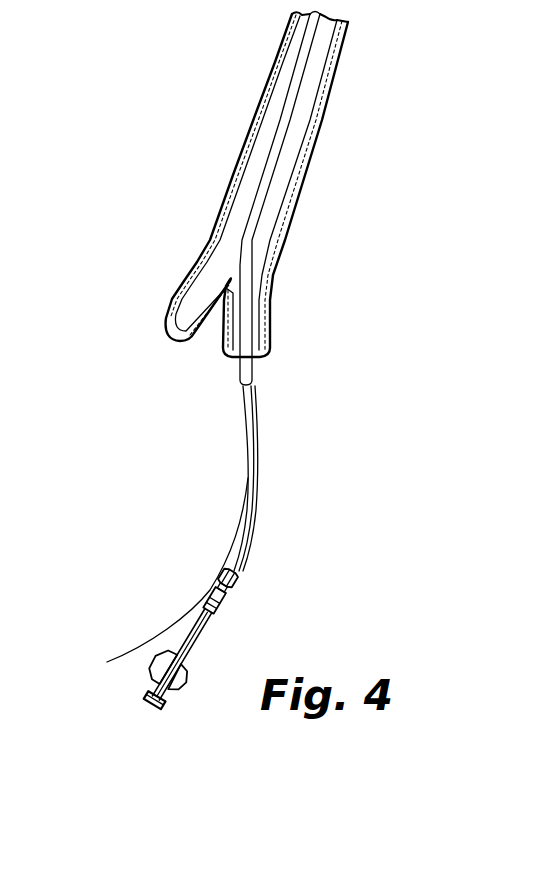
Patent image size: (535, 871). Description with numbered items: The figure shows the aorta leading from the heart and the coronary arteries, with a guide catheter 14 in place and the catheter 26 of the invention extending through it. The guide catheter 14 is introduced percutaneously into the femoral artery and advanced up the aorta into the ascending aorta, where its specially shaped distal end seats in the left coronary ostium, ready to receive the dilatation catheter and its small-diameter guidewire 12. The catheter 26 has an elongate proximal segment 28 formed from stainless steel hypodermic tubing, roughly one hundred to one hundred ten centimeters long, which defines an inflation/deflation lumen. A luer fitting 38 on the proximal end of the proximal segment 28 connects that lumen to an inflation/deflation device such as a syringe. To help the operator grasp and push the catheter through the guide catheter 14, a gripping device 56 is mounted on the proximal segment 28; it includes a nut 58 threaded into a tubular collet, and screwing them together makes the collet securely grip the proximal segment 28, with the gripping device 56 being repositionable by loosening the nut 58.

The guidewire 12 is at (221, 562).
The guide catheter 14 is at (286, 97).
The catheter 26 is at (258, 483).
The elongate proximal segment 28 is at (253, 540).
The luer fitting 38 is at (181, 688).
The gripping device 56 is at (241, 618).
The nut 58 is at (240, 582).